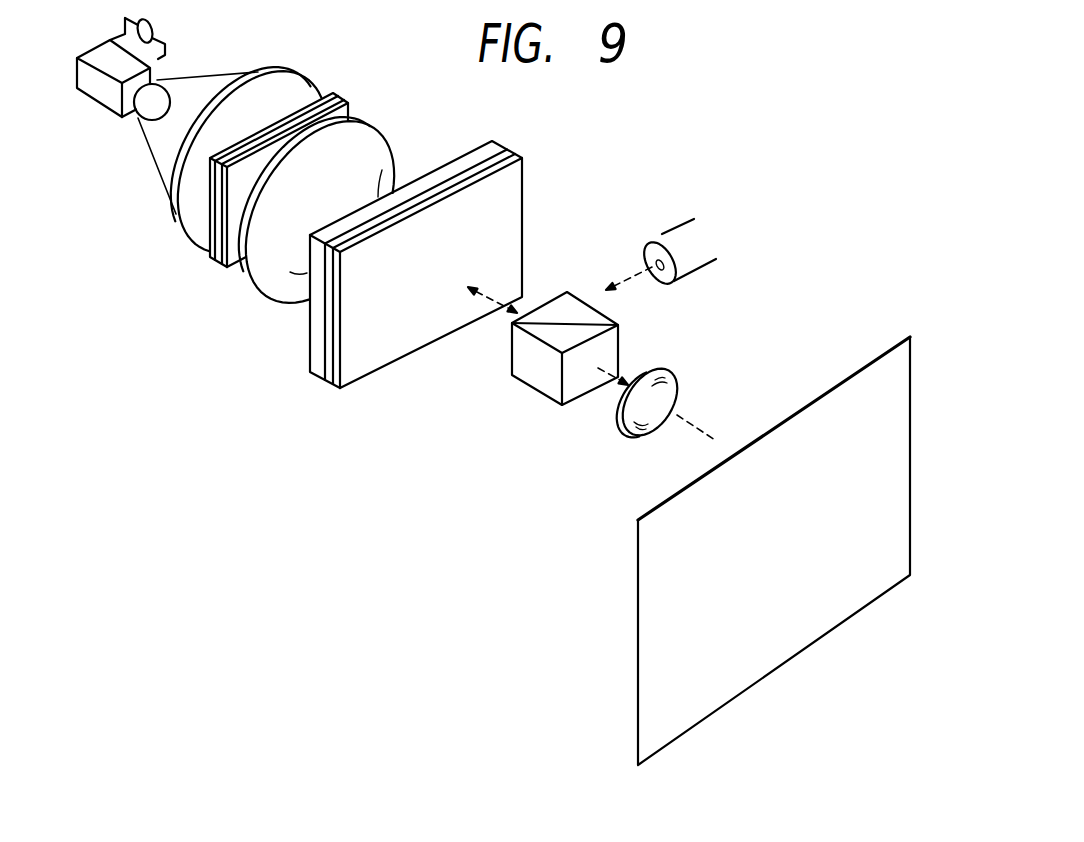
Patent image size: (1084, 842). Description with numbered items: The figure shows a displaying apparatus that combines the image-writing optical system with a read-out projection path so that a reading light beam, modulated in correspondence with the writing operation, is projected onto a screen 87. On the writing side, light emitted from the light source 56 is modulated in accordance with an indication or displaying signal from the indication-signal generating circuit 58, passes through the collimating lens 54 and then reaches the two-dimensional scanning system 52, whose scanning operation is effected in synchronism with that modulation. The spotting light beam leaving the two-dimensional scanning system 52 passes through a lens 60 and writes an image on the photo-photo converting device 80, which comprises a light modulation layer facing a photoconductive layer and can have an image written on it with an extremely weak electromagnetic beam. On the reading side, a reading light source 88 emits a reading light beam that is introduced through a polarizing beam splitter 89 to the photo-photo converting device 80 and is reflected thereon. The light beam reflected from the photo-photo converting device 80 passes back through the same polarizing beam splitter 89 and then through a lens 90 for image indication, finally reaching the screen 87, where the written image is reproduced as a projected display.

The two-dimensional scanning system 52 is at (329, 92).
The collimating lens 54 is at (266, 70).
The light source 56 is at (103, 100).
The indication-signal generating circuit 58 is at (151, 21).
The lens 60 is at (261, 282).
The photo-photo converting device 80 is at (524, 148).
The screen 87 is at (890, 346).
The reading light source 88 is at (678, 232).
The polarizing beam splitter 89 is at (511, 366).
The lens for image indication 90 is at (638, 432).